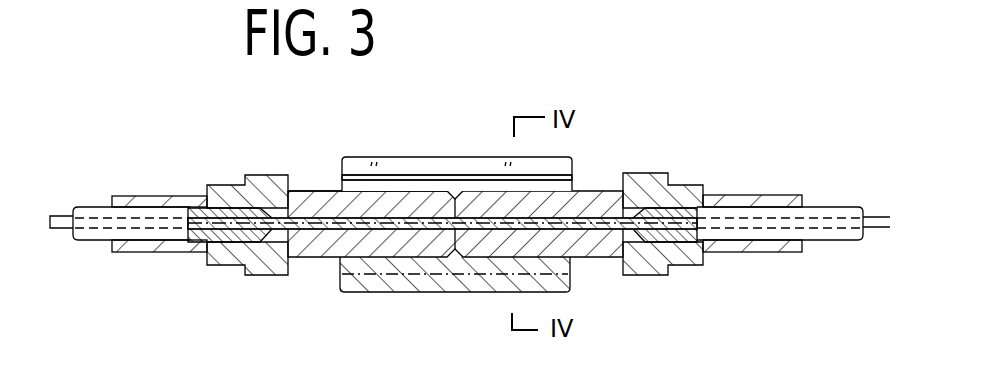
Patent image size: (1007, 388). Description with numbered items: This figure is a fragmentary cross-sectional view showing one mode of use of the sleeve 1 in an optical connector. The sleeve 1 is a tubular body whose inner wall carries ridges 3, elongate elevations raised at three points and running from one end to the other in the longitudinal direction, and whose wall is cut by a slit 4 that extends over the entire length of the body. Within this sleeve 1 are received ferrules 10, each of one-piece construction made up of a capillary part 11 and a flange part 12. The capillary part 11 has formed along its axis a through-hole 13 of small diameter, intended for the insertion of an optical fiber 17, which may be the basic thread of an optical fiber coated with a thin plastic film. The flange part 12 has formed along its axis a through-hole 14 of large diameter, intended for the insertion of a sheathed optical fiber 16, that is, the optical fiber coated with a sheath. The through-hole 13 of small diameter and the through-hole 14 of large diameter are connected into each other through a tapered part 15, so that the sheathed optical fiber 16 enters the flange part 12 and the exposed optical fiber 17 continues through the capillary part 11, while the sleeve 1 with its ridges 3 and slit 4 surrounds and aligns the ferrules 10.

The sleeve 1 is at (410, 149).
The ridges 3 is at (572, 270).
The slit 4 is at (358, 163).
The ferrule 10 is at (191, 183).
The capillary part 11 is at (312, 190).
The flange part 12 is at (128, 196).
The through-hole of small diameter 13 is at (493, 229).
The through-hole of large diameter 14 is at (750, 244).
The tapered part 15 is at (660, 255).
The sheathed optical fiber 16 is at (95, 242).
The optical fiber 17 is at (312, 233).